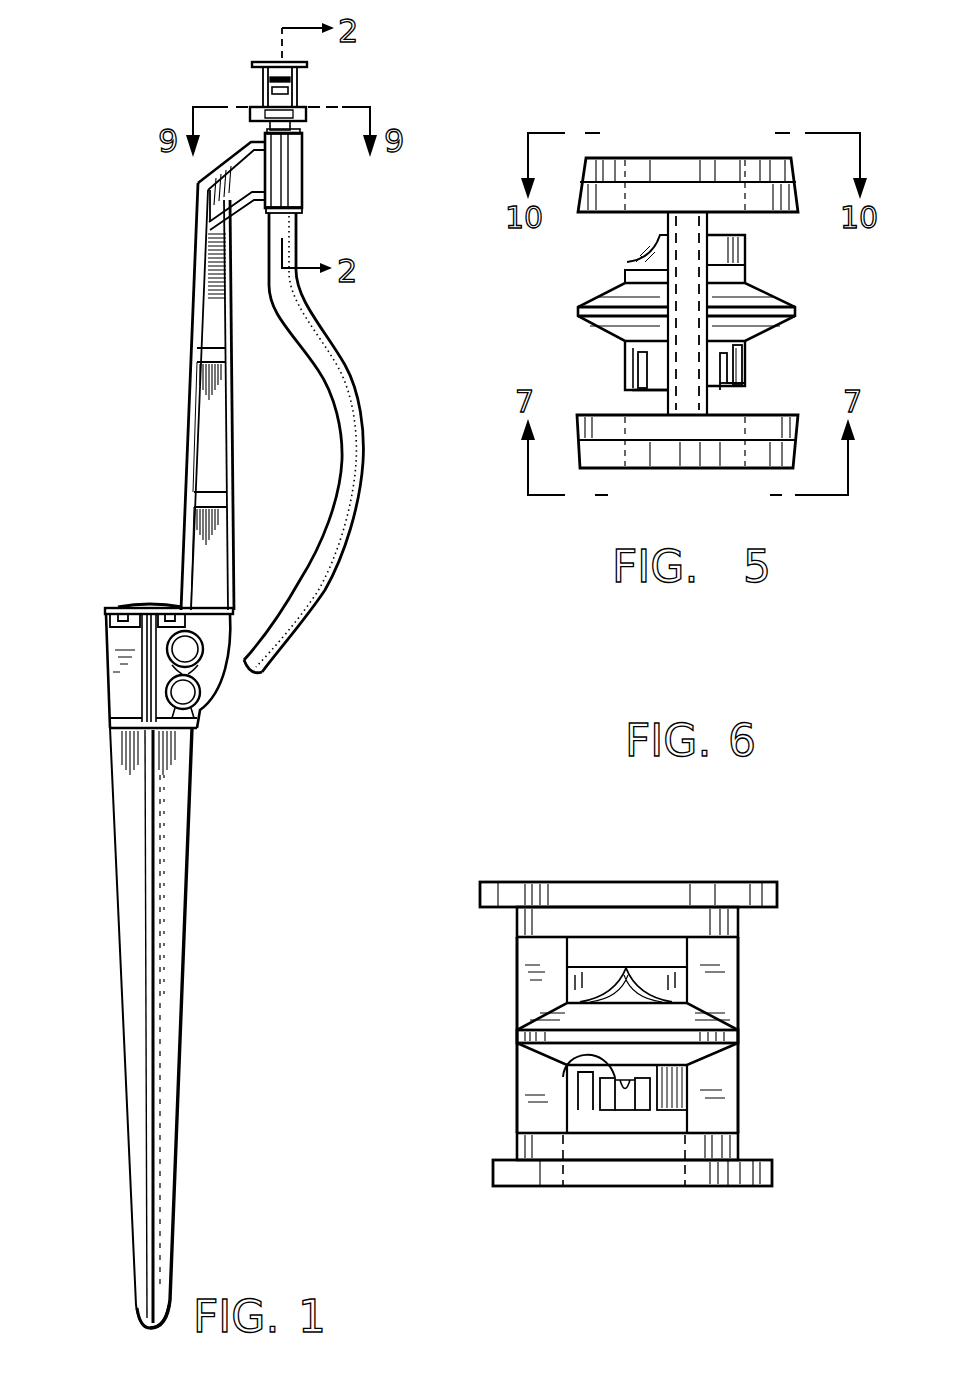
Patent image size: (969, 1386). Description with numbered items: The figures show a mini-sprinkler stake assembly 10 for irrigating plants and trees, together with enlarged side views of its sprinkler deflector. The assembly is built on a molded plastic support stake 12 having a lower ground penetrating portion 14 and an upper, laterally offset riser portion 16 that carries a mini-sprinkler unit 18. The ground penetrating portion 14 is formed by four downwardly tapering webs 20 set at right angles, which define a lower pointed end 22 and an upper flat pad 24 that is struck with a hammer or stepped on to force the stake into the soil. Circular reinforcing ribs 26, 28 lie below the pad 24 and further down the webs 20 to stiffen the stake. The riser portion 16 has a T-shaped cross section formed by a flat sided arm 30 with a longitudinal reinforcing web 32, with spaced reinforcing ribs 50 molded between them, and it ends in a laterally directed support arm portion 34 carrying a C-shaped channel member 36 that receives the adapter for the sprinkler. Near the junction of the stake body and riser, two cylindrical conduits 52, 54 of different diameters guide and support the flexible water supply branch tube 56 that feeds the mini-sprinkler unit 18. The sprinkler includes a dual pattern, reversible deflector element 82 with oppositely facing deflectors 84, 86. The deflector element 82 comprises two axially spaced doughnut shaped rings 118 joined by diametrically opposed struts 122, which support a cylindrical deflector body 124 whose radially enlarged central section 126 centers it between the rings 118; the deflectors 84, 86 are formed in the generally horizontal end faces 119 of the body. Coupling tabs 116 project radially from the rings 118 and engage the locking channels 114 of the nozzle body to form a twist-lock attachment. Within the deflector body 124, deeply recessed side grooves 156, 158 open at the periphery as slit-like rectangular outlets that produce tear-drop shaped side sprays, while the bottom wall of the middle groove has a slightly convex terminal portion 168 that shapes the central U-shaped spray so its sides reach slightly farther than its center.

In FIG. 1, the mini-sprinkler stake assembly 10 is at (140, 350).
In FIG. 1, the support stake 12 is at (90, 600).
In FIG. 1, the ground penetrating portion 14 is at (214, 944).
In FIG. 1, the riser portion 16 is at (208, 562).
In FIG. 1, the mini-sprinkler unit 18 is at (335, 68).
In FIG. 1, the webs 20 is at (178, 900).
In FIG. 1, the pointed end 22 is at (142, 1322).
In FIG. 1, the pad 24 is at (150, 604).
In FIG. 1, the reinforcing rib 26 is at (115, 640).
In FIG. 1, the reinforcing rib 28 is at (110, 760).
In FIG. 1, the arm 30 is at (195, 453).
In FIG. 1, the reinforcing web 32 is at (216, 437).
In FIG. 1, the support arm portion 34 is at (200, 186).
In FIG. 1, the channel member 36 is at (303, 187).
In FIG. 1, the reinforcing ribs 50 is at (225, 349).
In FIG. 1, the cylindrical conduit 52 is at (200, 652).
In FIG. 1, the cylindrical conduit 54 is at (190, 695).
In FIG. 1, the water supply branch tube 56 is at (350, 505).
In FIG. 5, the deflector element 82 is at (550, 300).
In FIG. 6, the deflector element 82 is at (500, 1030).
In FIG. 5, the deflector 84 is at (632, 241).
In FIG. 6, the deflector 84 is at (627, 966).
In FIG. 5, the deflector 86 is at (618, 382).
In FIG. 6, the deflector 86 is at (655, 1120).
In FIG. 5, the locking channels 114 is at (712, 392).
In FIG. 6, the coupling tabs 116 is at (487, 892).
In FIG. 5, the rings 118 is at (798, 190).
In FIG. 6, the rings 118 is at (740, 925).
In FIG. 5, the end faces 119 is at (742, 233).
In FIG. 6, the end faces 119 is at (581, 968).
In FIG. 5, the struts 122 is at (746, 265).
In FIG. 6, the struts 122 is at (525, 968).
In FIG. 5, the deflector body 124 is at (737, 350).
In FIG. 6, the deflector body 124 is at (650, 1072).
In FIG. 5, the central section 126 is at (796, 312).
In FIG. 6, the central section 126 is at (740, 1040).
In FIG. 5, the side groove 156 is at (746, 383).
In FIG. 5, the side groove 158 is at (628, 358).
In FIG. 5, the terminal portion 168 is at (747, 366).
In FIG. 6, the terminal portion 168 is at (560, 1070).